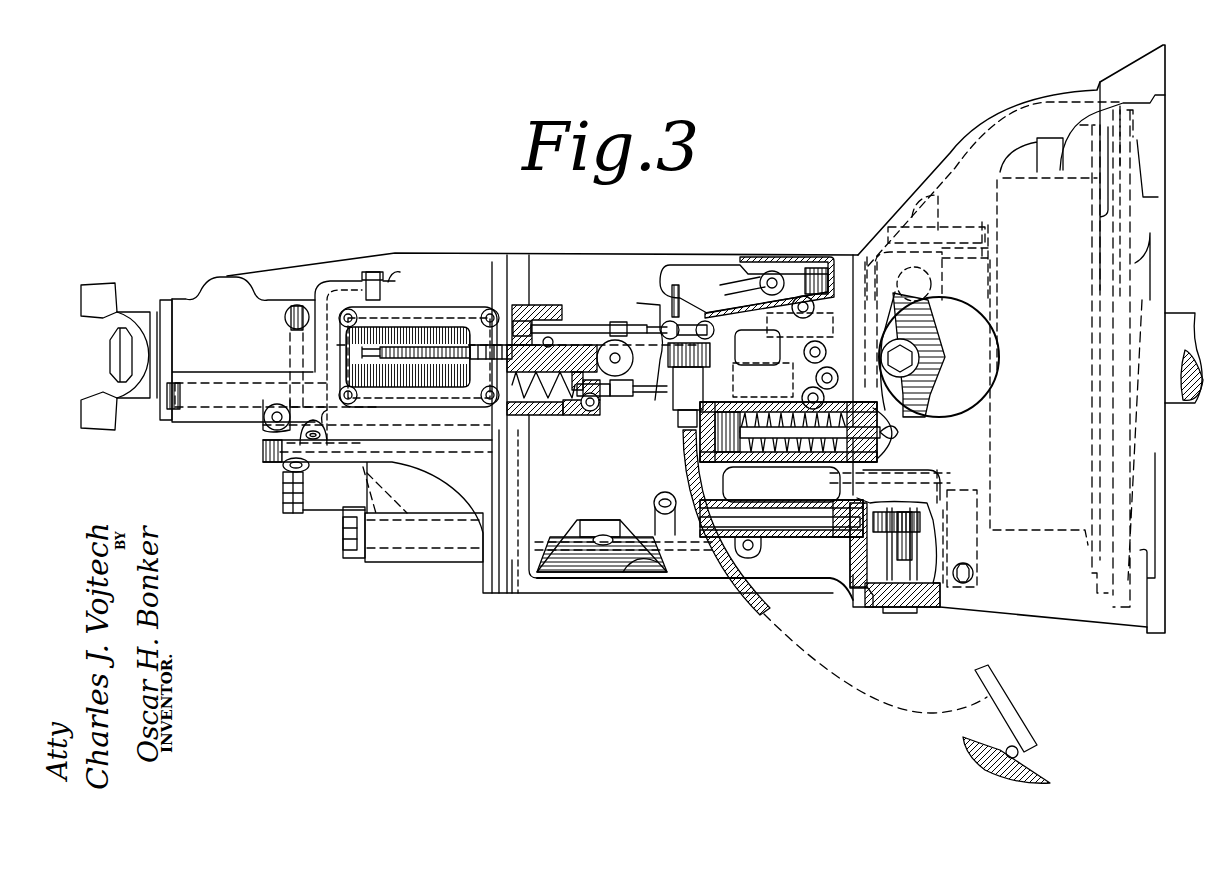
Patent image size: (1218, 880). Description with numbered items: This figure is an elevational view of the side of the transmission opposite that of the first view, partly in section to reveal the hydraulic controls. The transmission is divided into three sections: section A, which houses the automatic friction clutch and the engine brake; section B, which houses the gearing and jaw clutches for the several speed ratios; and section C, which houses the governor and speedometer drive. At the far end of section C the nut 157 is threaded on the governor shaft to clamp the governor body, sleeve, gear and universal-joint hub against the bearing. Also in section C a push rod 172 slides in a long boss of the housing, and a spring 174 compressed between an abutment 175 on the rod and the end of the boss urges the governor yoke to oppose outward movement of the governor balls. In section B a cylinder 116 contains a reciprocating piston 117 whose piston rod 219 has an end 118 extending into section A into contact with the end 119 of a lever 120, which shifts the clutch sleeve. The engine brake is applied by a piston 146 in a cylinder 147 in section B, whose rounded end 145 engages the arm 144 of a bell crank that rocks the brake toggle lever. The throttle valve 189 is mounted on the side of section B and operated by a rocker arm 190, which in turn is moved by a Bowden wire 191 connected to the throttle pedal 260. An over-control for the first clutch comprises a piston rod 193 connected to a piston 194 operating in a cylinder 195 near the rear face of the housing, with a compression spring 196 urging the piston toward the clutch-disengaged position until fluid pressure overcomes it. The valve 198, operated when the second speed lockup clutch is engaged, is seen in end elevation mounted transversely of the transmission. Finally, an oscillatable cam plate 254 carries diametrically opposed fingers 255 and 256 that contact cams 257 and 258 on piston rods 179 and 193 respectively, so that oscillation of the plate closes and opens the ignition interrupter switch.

The section A is at (940, 154).
The section B is at (652, 248).
The section C is at (336, 256).
The nut 157 is at (118, 357).
The push rod 172 is at (425, 362).
The spring 174 is at (437, 346).
The abutment 175 is at (395, 348).
The piston rod 179 is at (570, 326).
The cam plate 254 is at (597, 324).
The cam 257 is at (612, 322).
The finger 255 is at (609, 354).
The compression spring 196 is at (508, 402).
The cylinder 195 is at (545, 415).
The piston 194 is at (577, 416).
The piston rod 193 is at (583, 413).
The cam 258 is at (593, 412).
The finger 256 is at (623, 398).
The rocker arm 190 is at (752, 286).
The throttle valve 189 is at (847, 282).
The lever 120 is at (940, 388).
The end of piston rod 118 is at (900, 425).
The end of lever 119 is at (895, 440).
The piston rod 219 is at (885, 458).
The cylinder 116 is at (773, 456).
The piston 117 is at (727, 456).
The cylinder 147 is at (730, 512).
The piston 146 is at (780, 516).
The valve 198 is at (754, 548).
The Bowden wire 191 is at (762, 618).
The throttle pedal 260 is at (995, 688).
The arm of bell crank 144 is at (880, 585).
The rounded end of piston 145 is at (843, 593).